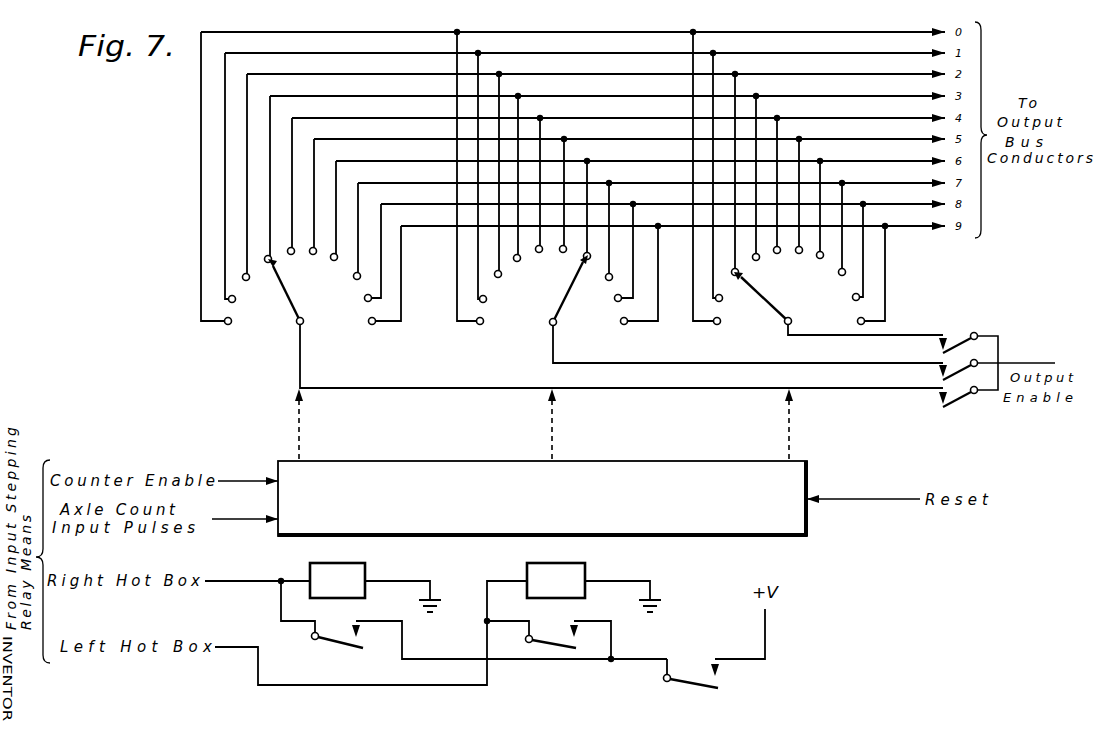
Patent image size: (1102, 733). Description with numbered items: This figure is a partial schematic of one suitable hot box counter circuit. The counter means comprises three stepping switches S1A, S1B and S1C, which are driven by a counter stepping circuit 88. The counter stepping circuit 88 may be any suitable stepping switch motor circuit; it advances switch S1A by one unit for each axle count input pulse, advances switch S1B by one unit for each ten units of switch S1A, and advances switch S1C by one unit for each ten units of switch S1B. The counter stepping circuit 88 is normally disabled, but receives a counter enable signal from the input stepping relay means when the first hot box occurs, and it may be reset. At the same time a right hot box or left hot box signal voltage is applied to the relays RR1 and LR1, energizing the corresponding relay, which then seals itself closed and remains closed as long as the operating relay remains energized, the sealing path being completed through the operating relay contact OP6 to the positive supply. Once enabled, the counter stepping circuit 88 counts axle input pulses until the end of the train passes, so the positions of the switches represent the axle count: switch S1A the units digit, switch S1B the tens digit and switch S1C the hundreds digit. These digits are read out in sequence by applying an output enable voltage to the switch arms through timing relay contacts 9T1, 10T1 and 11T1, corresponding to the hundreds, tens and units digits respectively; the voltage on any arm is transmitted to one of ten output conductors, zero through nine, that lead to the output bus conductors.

The counter stepping circuit 88 is at (808, 506).
The stepping switch S1A is at (760, 305).
The stepping switch S1B is at (538, 295).
The stepping switch S1C is at (277, 297).
The timing relay contact 11T1 is at (950, 348).
The timing relay contact 10T1 is at (975, 374).
The timing relay contact 9T1 is at (951, 388).
The relay RR1 is at (314, 640).
The relay LR1 is at (535, 650).
The operating relay contact OP6 is at (683, 675).